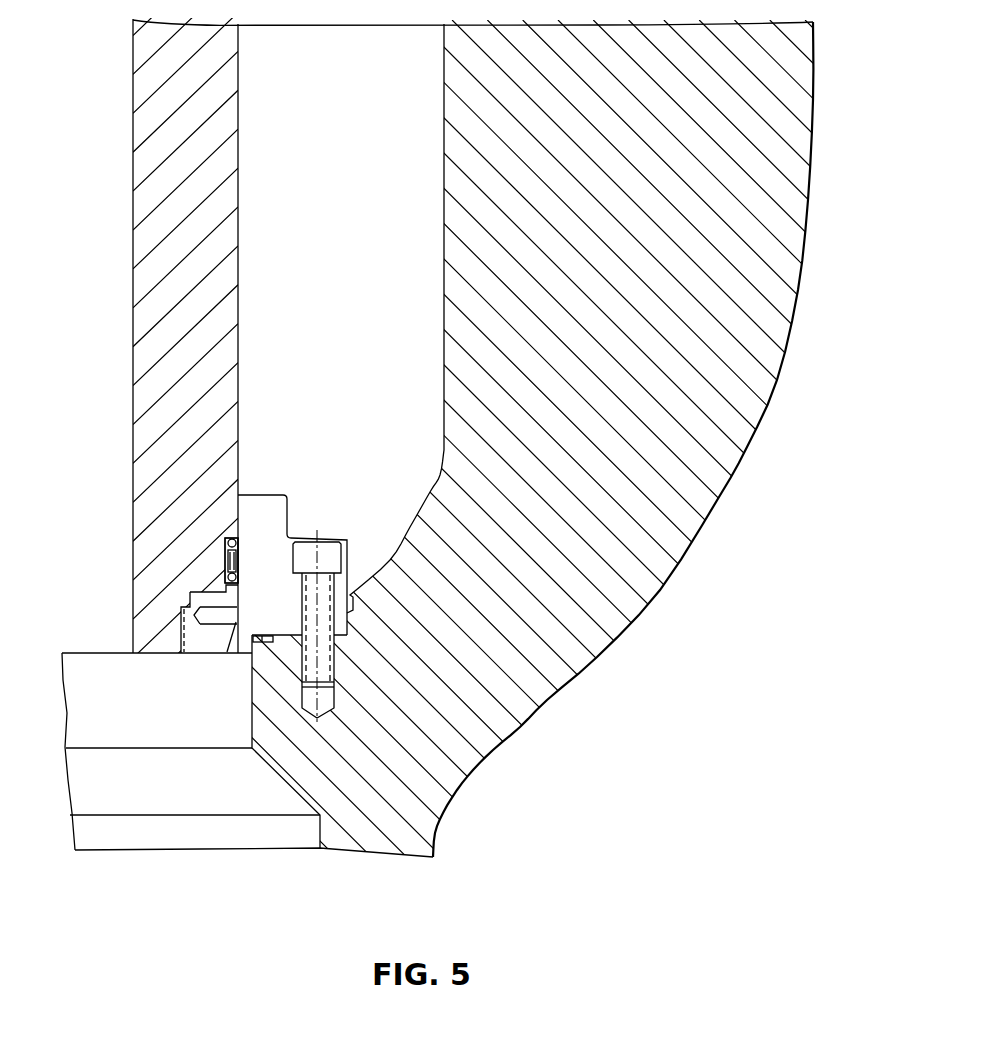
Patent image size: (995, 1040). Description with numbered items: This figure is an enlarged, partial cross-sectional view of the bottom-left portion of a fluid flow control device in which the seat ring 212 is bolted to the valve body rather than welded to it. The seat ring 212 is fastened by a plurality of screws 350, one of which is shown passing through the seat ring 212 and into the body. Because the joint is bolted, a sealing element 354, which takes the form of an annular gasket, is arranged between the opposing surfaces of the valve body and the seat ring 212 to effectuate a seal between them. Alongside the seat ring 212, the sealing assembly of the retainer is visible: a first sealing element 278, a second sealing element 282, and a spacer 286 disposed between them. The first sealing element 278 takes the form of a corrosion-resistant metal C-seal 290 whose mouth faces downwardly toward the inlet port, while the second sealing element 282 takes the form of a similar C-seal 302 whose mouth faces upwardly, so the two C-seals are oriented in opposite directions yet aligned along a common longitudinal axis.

The seat ring 212 is at (350, 537).
The first sealing element 278 is at (240, 543).
The C-seal 290 is at (291, 456).
The spacer 286 is at (240, 558).
The second sealing element 282 is at (238, 573).
The C-seal 302 is at (325, 508).
The screw 350 is at (327, 558).
The sealing element 354 is at (273, 638).